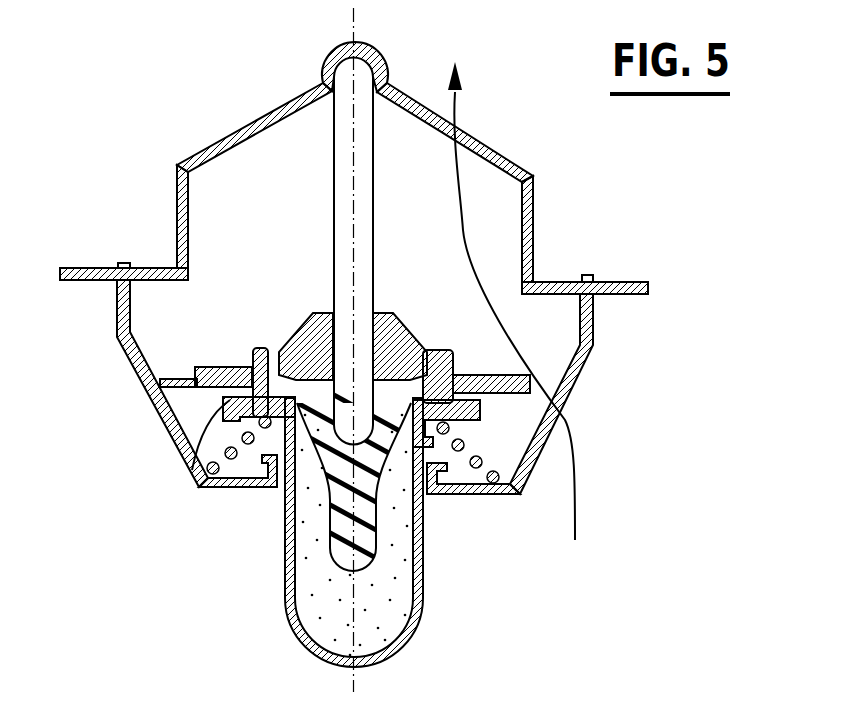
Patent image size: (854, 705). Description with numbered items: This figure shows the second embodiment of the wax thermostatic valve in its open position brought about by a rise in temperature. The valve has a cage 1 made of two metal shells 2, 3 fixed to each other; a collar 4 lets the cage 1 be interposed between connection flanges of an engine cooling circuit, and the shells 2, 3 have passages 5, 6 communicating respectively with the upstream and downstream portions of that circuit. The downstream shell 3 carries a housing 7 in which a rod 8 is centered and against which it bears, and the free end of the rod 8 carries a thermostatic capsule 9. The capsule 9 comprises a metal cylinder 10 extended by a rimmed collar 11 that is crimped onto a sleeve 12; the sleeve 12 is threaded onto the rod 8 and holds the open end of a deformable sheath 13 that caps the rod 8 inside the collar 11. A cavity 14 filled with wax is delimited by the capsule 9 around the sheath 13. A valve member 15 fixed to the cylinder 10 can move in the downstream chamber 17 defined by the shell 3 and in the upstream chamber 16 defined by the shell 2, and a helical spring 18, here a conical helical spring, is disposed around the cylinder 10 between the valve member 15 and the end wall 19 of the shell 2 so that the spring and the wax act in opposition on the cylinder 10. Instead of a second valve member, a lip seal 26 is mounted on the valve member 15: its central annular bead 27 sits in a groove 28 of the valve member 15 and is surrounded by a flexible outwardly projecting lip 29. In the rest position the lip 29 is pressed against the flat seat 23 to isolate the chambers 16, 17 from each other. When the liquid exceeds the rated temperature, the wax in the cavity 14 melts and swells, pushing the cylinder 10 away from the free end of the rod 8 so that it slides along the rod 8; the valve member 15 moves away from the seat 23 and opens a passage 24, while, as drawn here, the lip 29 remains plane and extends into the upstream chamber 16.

The cage 1 is at (240, 120).
The upstream shell 2 is at (183, 463).
The downstream shell 3 is at (182, 166).
The collar 4 is at (84, 269).
The passage 5 is at (588, 374).
The passage 6 is at (480, 136).
The housing 7 is at (368, 66).
The rod 8 is at (333, 63).
The thermostatic capsule 9 is at (278, 622).
The metal cylinder 10 is at (424, 570).
The rimmed collar 11 is at (434, 350).
The sleeve 12 is at (398, 316).
The deformable sheath 13 is at (362, 548).
The cavity 14 is at (374, 610).
The valve member 15 is at (203, 366).
The upstream chamber 16 is at (507, 430).
The downstream chamber 17 is at (280, 212).
The helical spring 18 is at (232, 460).
The end wall 19 is at (243, 490).
The seat 23 is at (189, 289).
The passage 24 is at (535, 307).
The lip seal 26 is at (193, 394).
The central annular bead 27 is at (204, 408).
The groove 28 is at (254, 348).
The lip 29 is at (174, 382).